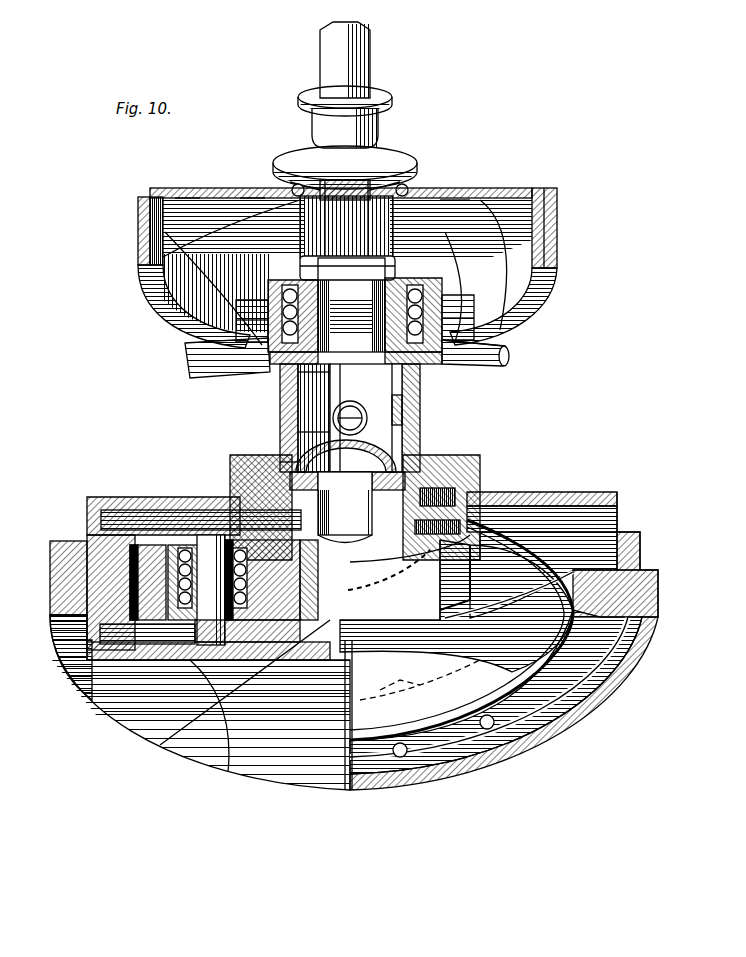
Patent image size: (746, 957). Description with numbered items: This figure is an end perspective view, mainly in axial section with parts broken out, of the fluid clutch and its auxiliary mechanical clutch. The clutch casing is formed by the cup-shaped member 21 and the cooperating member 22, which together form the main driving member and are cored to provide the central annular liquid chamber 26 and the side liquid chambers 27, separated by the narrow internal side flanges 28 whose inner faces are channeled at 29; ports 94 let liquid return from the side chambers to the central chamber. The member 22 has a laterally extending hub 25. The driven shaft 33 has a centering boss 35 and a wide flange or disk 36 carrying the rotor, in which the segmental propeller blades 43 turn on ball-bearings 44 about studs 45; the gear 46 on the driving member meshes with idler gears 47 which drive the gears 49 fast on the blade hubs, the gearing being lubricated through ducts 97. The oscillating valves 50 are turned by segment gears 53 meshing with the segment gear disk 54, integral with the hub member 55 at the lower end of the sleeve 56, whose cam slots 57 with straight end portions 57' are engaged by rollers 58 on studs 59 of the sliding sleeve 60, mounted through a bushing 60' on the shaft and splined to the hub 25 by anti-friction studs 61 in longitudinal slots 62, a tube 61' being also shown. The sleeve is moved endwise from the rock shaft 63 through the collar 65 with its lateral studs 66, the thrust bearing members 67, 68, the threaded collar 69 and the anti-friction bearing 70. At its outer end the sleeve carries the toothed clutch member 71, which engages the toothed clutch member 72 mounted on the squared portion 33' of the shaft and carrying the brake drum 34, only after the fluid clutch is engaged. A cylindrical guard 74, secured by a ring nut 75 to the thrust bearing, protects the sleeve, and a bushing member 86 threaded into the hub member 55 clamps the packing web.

The cup-shaped casing member 21 is at (122, 720).
The cooperating casing member 22 is at (87, 505).
The hub 25 is at (300, 432).
The central annular liquid chamber 26 is at (630, 536).
The side liquid chambers 27 is at (612, 497).
The internal annular side flanges 28 is at (570, 516).
The channels 29 is at (543, 506).
The driven shaft 33 is at (345, 473).
The squared portion of transmission shaft 33' is at (363, 60).
The brake drum 34 is at (543, 232).
The centering boss 35 is at (345, 514).
The flange or disk 36 is at (255, 520).
The segmental propeller blades 43 is at (130, 556).
The ball-bearings 44 is at (176, 580).
The studs or shafts 45 is at (178, 596).
The gear 46 is at (229, 772).
The idler gears 47 is at (162, 742).
The gears 49 is at (100, 682).
The oscillating valves 50 is at (350, 792).
The segment gear 53 is at (456, 617).
The segment gear disk 54 is at (480, 518).
The hub member 55 is at (460, 498).
The sleeve 56 is at (404, 420).
The cam slots 57 is at (395, 418).
The straight end portions of cam slots 57' is at (287, 418).
The rollers 58 is at (366, 412).
The studs 59 is at (298, 455).
The sliding sleeve 60 is at (439, 315).
The bushing 60' is at (431, 418).
The anti-friction studs 61 is at (487, 331).
The tube 61' is at (289, 383).
The longitudinal slots 62 is at (505, 354).
The rock shaft 63 is at (506, 362).
The collar 65 is at (430, 284).
The lateral studs 66 is at (236, 320).
The thrust bearing member 67 is at (262, 365).
The thrust bearing member 68 is at (250, 200).
The collar 69 is at (455, 205).
The anti-friction bearing 70 is at (188, 200).
The toothed clutch member 71 is at (412, 205).
The toothed clutch member 72 is at (372, 172).
The cylindrical guard or skirt 74 is at (282, 300).
The ring nut 75 is at (205, 372).
The bushing member 86 is at (288, 462).
The ports 94 is at (490, 730).
The ducts 97 is at (208, 535).